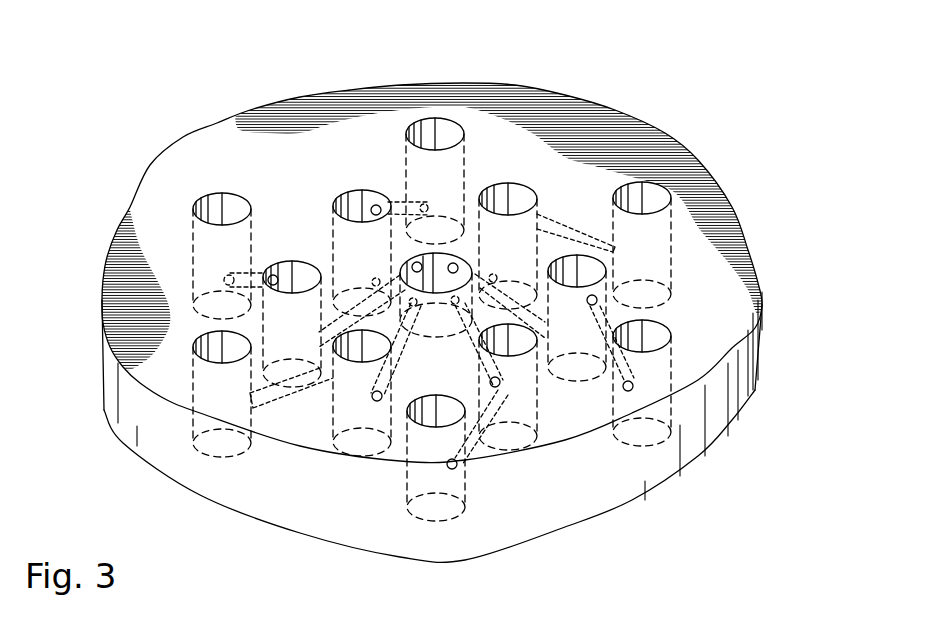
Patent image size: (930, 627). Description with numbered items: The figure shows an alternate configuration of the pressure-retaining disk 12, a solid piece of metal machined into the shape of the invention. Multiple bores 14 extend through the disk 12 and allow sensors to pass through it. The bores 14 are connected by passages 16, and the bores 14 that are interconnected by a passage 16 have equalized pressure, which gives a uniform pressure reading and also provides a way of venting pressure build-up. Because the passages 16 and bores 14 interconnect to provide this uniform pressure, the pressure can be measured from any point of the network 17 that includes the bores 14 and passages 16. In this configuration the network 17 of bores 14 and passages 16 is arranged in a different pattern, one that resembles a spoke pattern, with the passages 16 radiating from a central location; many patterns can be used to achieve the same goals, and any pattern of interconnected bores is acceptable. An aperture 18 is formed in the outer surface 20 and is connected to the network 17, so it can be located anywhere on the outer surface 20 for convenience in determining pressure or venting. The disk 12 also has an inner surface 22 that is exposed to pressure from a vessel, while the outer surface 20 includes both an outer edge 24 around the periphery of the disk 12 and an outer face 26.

The pressure-retaining disk 12 is at (158, 98).
The bores 14 is at (443, 130).
The passage 16 is at (262, 276).
The network 17 is at (537, 388).
The aperture 18 is at (443, 253).
The outer surface 20 is at (718, 436).
The inner surface 22 is at (423, 540).
The outer edge 24 is at (745, 357).
The outer face 26 is at (692, 178).